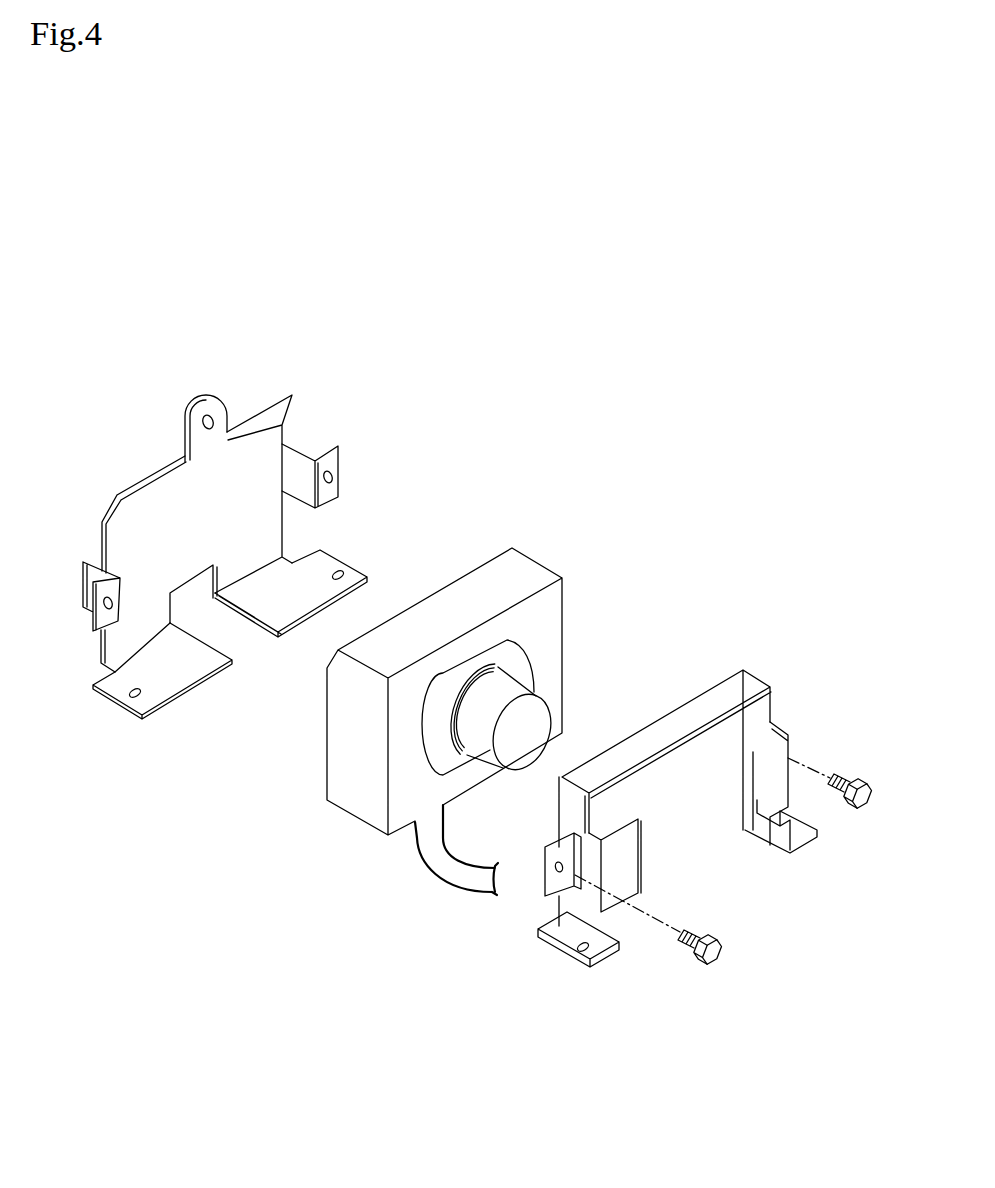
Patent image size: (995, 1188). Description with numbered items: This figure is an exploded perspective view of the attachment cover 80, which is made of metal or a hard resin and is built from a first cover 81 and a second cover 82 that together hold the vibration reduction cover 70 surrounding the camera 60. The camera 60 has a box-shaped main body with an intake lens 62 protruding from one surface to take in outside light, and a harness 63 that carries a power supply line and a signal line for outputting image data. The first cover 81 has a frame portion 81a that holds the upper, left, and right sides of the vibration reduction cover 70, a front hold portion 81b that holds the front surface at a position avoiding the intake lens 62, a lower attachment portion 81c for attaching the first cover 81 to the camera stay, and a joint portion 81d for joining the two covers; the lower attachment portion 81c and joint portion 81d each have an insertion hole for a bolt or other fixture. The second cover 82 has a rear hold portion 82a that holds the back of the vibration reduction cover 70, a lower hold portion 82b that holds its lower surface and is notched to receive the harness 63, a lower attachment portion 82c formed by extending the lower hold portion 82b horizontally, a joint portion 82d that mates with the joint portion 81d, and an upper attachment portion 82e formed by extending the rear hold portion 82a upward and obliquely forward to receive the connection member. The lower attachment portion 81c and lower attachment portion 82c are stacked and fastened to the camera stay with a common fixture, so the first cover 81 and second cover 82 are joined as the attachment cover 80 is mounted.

The attachment cover 80 is at (685, 302).
The first cover 81 is at (721, 552).
The frame portion 81a is at (680, 722).
The front hold portion 81b is at (632, 858).
The lower attachment portion 81c is at (802, 838).
The joint portion 81d is at (773, 722).
The second cover 82 is at (445, 412).
The rear hold portion 82a is at (260, 530).
The lower hold portion 82b is at (280, 612).
The lower attachment portion 82c is at (327, 563).
The joint portion 82d is at (340, 457).
The upper attachment portion 82e is at (221, 405).
The camera 60 is at (538, 679).
The intake lens 62 is at (542, 720).
The harness 63 is at (445, 867).
The vibration reduction cover 70 is at (363, 808).